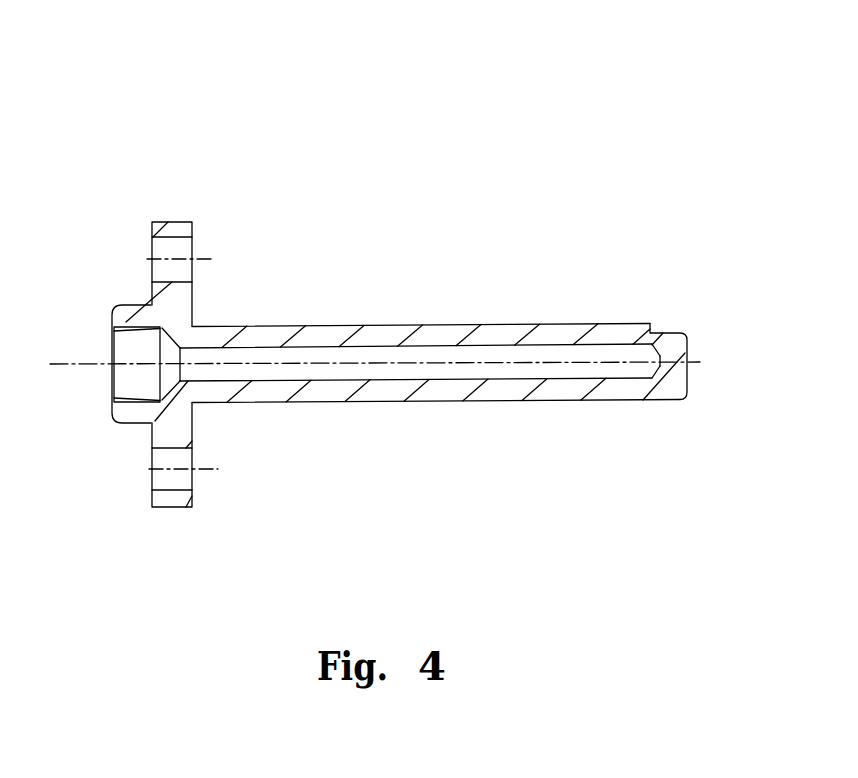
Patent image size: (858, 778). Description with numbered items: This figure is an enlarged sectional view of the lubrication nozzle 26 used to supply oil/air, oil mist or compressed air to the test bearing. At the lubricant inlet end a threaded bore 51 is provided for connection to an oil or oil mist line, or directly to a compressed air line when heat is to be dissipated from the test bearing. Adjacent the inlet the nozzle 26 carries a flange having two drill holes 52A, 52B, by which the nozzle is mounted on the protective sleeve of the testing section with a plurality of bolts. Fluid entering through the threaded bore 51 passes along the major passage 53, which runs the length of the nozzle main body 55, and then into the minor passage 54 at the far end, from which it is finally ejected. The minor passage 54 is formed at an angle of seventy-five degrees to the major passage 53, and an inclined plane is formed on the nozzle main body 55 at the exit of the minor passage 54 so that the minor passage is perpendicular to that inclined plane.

The lubrication nozzle 26 is at (660, 194).
The threaded bore 51 is at (123, 353).
The drill hole 52A is at (183, 265).
The drill hole 52B is at (177, 468).
The major passage 53 is at (323, 365).
The minor passage 54 is at (657, 342).
The nozzle main body 55 is at (665, 386).